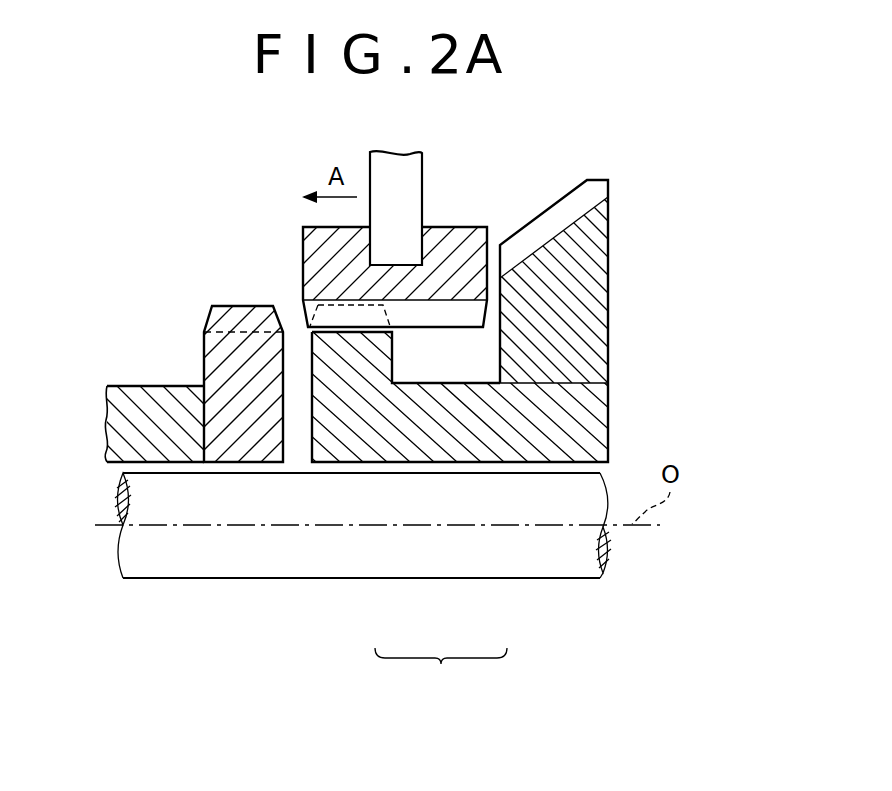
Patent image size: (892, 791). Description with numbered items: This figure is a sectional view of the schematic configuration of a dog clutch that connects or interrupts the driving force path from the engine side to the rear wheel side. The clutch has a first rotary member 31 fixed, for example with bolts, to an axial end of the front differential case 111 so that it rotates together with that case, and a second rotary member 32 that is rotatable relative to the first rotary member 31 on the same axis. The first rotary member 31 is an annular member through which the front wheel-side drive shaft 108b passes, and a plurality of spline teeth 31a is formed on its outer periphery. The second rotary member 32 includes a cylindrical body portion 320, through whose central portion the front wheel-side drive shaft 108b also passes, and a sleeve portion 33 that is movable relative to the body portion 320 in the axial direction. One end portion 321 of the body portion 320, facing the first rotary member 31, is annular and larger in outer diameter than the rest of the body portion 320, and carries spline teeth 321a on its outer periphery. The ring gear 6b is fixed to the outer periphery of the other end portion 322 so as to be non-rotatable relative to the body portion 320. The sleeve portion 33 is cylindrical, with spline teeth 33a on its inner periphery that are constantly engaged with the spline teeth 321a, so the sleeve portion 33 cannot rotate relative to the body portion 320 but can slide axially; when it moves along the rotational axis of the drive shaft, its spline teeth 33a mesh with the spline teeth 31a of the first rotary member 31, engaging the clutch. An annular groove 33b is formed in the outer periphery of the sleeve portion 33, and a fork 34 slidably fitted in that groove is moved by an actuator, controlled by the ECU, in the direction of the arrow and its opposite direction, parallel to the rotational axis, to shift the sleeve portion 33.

The front differential case 111 is at (138, 394).
The first rotary member 31 is at (208, 360).
The spline teeth 31a is at (245, 318).
The body portion 320 is at (443, 490).
The one end portion 321 is at (355, 375).
The spline teeth 321a is at (303, 313).
The other end portion 322 is at (600, 418).
The ring gear 6b is at (598, 292).
The sleeve portion 33 is at (387, 413).
The spline teeth 33a is at (400, 315).
The annular groove 33b is at (372, 253).
The fork 34 is at (417, 182).
The front wheel-side drive shaft 108b is at (517, 573).
The second rotary member 32 is at (441, 671).